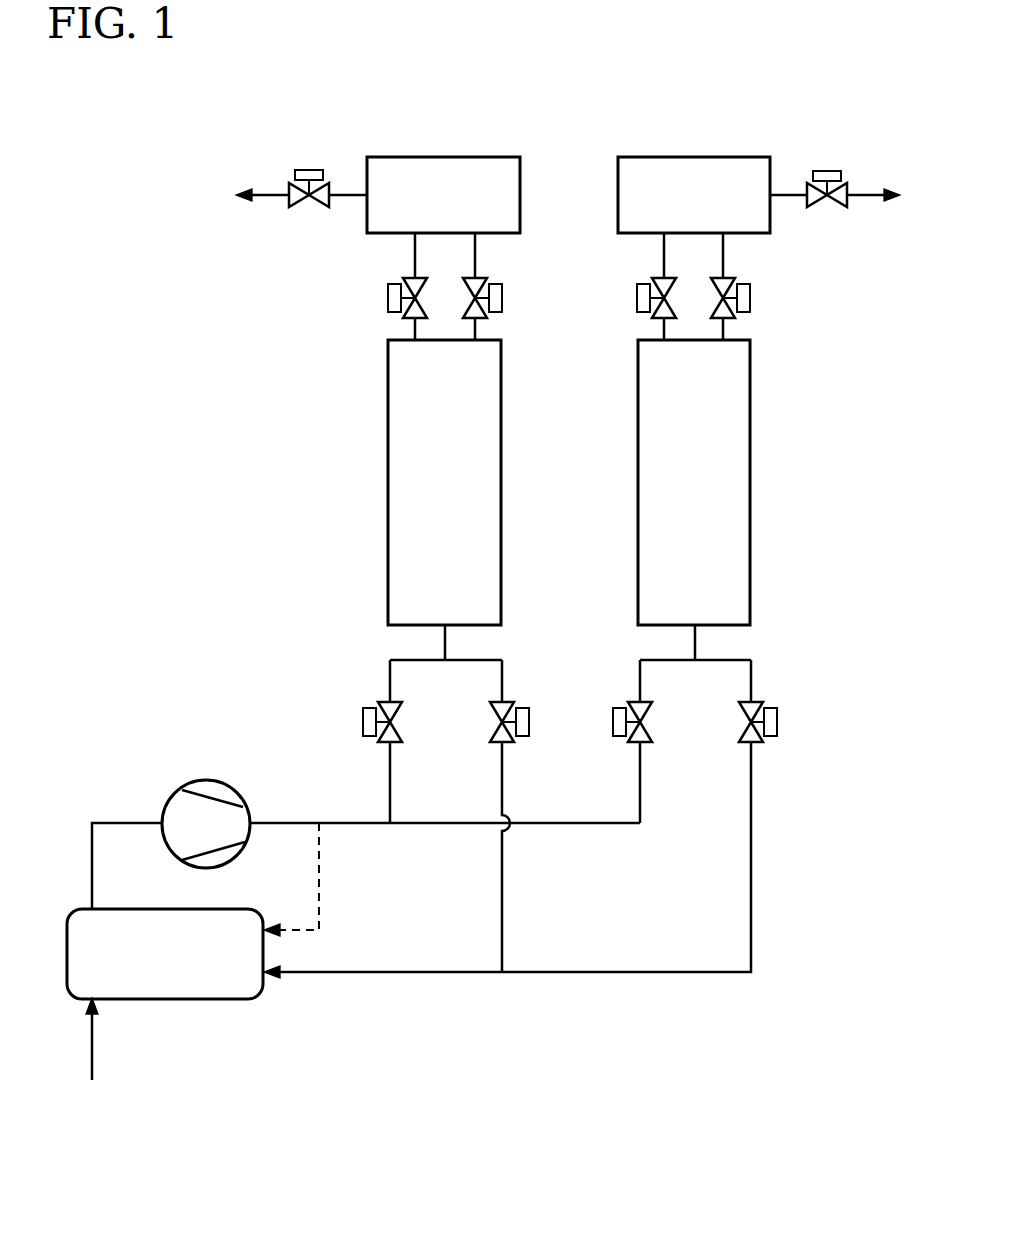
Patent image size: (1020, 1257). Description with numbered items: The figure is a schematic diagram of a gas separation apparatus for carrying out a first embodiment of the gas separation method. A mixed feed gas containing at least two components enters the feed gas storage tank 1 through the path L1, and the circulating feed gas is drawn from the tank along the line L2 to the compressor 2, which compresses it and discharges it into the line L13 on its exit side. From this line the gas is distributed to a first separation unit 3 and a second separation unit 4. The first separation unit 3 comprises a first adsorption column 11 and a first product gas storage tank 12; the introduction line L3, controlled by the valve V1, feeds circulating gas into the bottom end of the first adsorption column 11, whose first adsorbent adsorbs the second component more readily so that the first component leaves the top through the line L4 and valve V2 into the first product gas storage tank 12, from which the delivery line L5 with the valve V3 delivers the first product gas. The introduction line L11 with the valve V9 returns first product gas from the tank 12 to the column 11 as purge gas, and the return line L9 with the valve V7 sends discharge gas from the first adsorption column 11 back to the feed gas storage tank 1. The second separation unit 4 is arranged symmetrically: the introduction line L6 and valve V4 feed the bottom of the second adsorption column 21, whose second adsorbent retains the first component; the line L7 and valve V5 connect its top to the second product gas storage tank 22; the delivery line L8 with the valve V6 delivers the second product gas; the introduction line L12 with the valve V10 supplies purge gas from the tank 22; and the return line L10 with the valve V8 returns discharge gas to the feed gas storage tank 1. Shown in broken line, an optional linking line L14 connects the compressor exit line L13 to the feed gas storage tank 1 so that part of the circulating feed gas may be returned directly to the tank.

The feed gas storage tank 1 is at (235, 1000).
The compressor 2 is at (206, 780).
The first separation unit 3 is at (401, 482).
The second separation unit 4 is at (741, 482).
The first adsorption column 11 is at (388, 483).
The first product gas storage tank 12 is at (445, 157).
The second adsorption column 21 is at (750, 483).
The second product gas storage tank 22 is at (696, 157).
The valve V1 is at (363, 722).
The valve V2 is at (388, 297).
The valve V3 is at (309, 170).
The valve V4 is at (620, 708).
The valve V5 is at (637, 297).
The valve V6 is at (827, 171).
The valve V7 is at (522, 708).
The valve V8 is at (777, 722).
The valve V9 is at (502, 297).
The valve V10 is at (750, 297).
The path L1 is at (92, 1047).
The line L2 is at (128, 823).
The introduction line L3 is at (390, 782).
The line L4 is at (415, 252).
The delivery line L5 is at (270, 200).
The introduction line L6 is at (640, 785).
The line L7 is at (664, 252).
The delivery line L8 is at (865, 200).
The return line L9 is at (502, 785).
The return line L10 is at (751, 858).
The introduction line L11 is at (475, 252).
The introduction line L12 is at (723, 252).
The line L13 is at (355, 823).
The linking line L14 is at (320, 914).